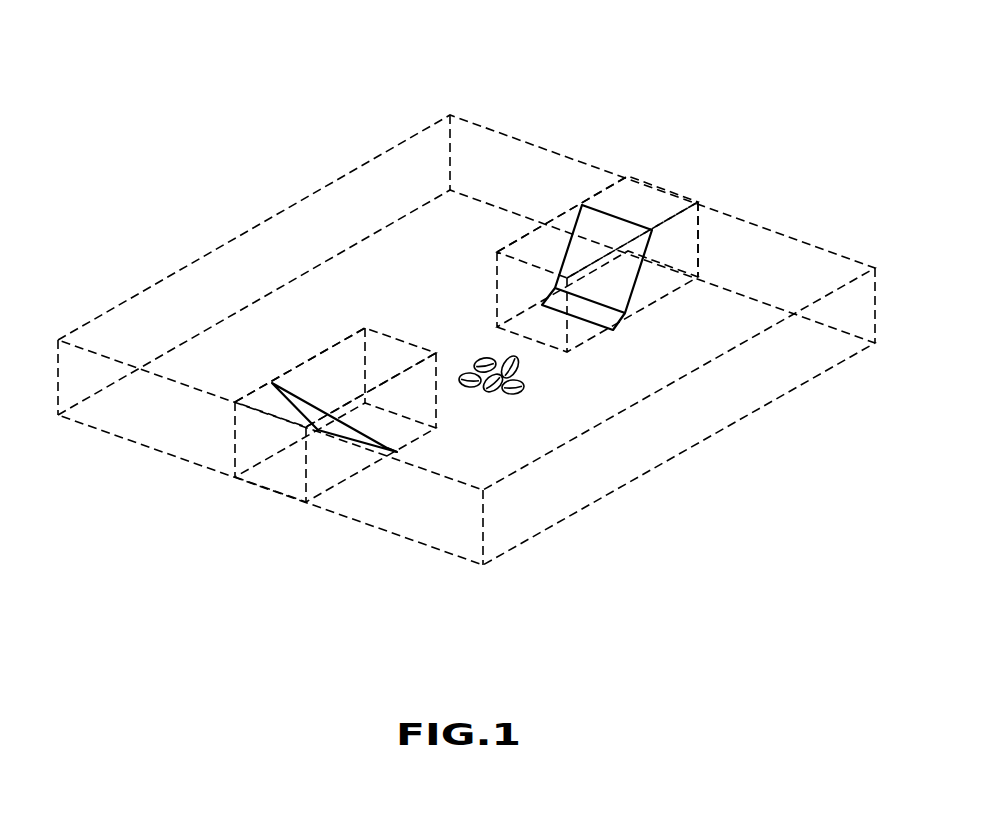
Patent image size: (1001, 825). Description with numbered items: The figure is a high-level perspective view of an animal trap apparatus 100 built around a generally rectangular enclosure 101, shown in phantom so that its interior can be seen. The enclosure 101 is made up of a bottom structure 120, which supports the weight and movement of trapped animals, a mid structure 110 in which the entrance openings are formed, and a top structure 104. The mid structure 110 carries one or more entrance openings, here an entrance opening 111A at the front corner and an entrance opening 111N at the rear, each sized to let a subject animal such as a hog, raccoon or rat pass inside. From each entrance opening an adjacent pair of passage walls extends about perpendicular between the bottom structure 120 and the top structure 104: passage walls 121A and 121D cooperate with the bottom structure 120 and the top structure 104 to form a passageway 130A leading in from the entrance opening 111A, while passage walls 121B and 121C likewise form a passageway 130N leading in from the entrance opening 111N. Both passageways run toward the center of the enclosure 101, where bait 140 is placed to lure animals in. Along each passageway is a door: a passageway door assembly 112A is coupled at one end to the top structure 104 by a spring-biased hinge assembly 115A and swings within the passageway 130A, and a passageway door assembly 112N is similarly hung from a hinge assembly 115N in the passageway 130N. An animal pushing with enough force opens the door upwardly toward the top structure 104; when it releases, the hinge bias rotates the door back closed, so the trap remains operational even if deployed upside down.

The animal trap apparatus 100 is at (214, 56).
The enclosure 101 is at (820, 248).
The top structure 104 is at (155, 285).
The mid structure 110 is at (57, 385).
The bottom structure 120 is at (560, 522).
The passageway 130A is at (234, 489).
The passageway 130N is at (661, 178).
The entrance opening 111A is at (285, 495).
The entrance opening 111N is at (699, 200).
The passage wall 121A is at (338, 343).
The passage wall 121B is at (512, 248).
The passage wall 121C is at (657, 225).
The passage wall 121D is at (400, 374).
The hinge assembly 115A is at (310, 400).
The hinge assembly 115N is at (608, 213).
The passageway door assembly 112A is at (399, 446).
The passageway door assembly 112N is at (628, 310).
The bait 140 is at (484, 354).